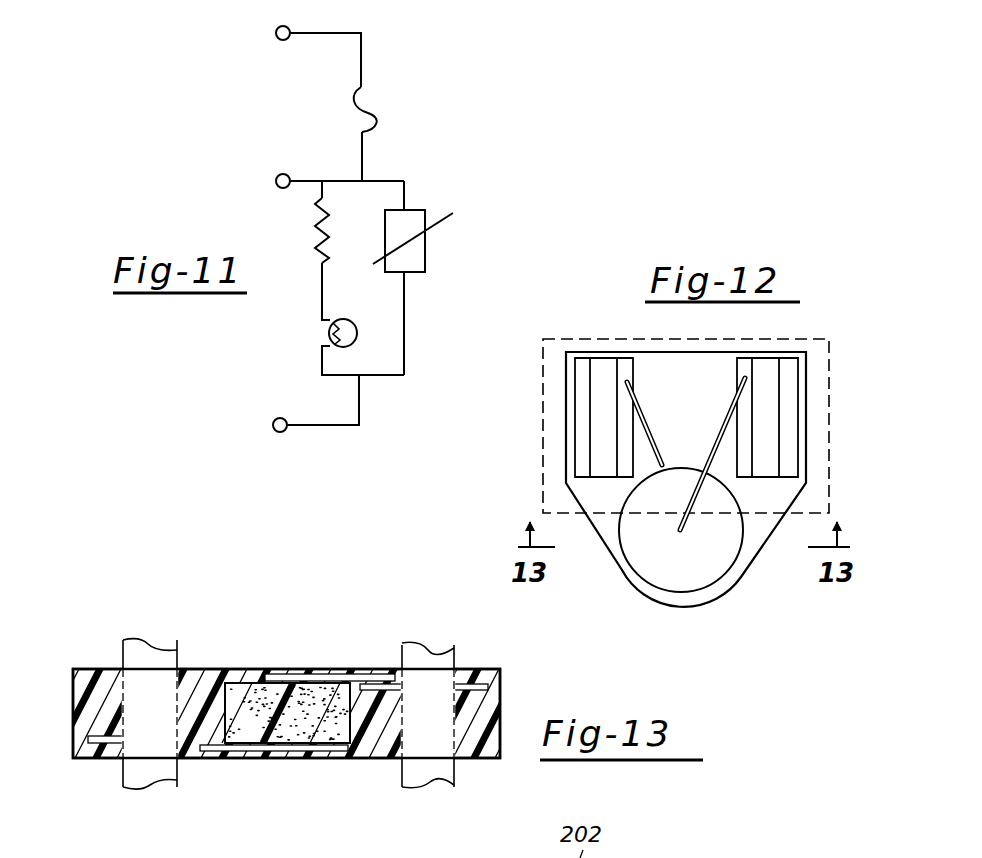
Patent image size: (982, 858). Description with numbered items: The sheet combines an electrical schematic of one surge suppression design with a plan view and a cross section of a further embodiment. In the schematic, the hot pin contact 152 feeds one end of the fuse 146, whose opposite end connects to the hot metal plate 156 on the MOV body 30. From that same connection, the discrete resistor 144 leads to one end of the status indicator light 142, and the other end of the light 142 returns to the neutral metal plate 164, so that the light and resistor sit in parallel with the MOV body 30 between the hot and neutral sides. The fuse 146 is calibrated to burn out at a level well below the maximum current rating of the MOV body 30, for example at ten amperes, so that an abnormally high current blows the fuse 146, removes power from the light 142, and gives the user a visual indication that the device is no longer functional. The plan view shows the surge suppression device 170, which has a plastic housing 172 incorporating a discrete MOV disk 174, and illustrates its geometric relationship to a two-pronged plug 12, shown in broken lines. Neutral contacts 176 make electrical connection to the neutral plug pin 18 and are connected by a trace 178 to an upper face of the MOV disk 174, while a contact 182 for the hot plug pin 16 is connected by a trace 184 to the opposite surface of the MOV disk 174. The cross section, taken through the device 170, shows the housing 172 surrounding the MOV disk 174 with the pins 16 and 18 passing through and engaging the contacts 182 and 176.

In FIG. 11, the hot pin contact 152 is at (275, 34).
In FIG. 11, the fuse 146 is at (371, 112).
In FIG. 11, the hot metal plate 156 is at (275, 181).
In FIG. 11, the discrete resistor 144 is at (322, 235).
In FIG. 11, the MOV body 30 is at (415, 253).
In FIG. 11, the status indicator light 142 is at (329, 335).
In FIG. 11, the neutral metal plate 164 is at (274, 432).
In FIG. 12, the two-pronged plug 12 is at (834, 440).
In FIG. 12, the surge suppression device 170 is at (762, 573).
In FIG. 13, the surge suppression device 170 is at (311, 662).
In FIG. 12, the plastic housing 172 is at (608, 538).
In FIG. 13, the plastic housing 172 is at (485, 708).
In FIG. 12, the MOV disk 174 is at (693, 565).
In FIG. 13, the MOV disk 174 is at (318, 740).
In FIG. 12, the neutral contacts 176 is at (788, 385).
In FIG. 13, the neutral contacts 176 is at (473, 662).
In FIG. 12, the trace 178 is at (720, 426).
In FIG. 12, the contact 182 is at (580, 440).
In FIG. 13, the contact 182 is at (117, 758).
In FIG. 12, the trace 184 is at (643, 412).
In FIG. 13, the trace 184 is at (243, 758).
In FIG. 13, the hot plug pin 16 is at (150, 773).
In FIG. 13, the neutral plug pin 18 is at (430, 662).